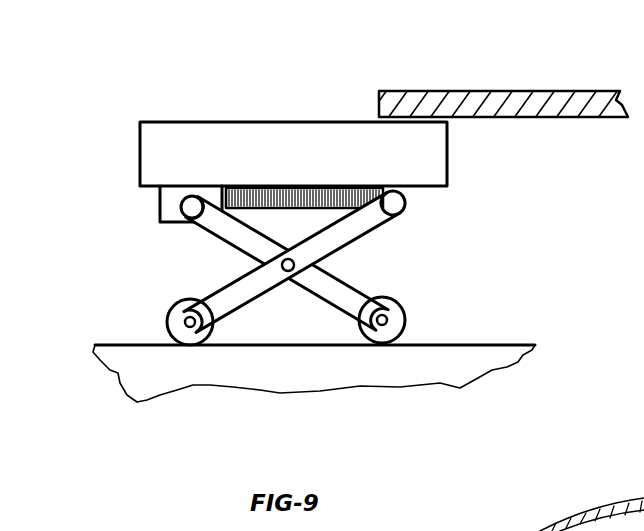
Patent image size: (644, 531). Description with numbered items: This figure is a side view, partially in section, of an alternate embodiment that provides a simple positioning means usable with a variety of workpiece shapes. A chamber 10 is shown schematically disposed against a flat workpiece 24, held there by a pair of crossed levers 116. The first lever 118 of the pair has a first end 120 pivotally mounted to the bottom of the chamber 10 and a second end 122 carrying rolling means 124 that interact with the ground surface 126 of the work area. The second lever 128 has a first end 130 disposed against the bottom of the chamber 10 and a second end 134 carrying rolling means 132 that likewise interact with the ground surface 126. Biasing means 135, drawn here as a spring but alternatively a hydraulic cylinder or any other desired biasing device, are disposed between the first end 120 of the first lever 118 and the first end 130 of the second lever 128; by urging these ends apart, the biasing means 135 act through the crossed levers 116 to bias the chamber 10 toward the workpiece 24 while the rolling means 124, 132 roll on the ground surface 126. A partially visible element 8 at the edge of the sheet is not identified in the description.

The chamber 10 is at (239, 108).
The flat workpiece 24 is at (490, 106).
The biasing means 135 is at (296, 190).
The first end of first lever 120 is at (212, 232).
The first lever 118 is at (307, 293).
The second lever 128 is at (228, 300).
The first end of second lever 130 is at (370, 221).
The pair of crossed levers 116 is at (362, 263).
The rolling means 132 is at (186, 339).
The second end of second lever 134 is at (184, 326).
The second end of first lever 122 is at (397, 301).
The rolling means 124 is at (405, 328).
The ground surface 126 is at (510, 343).
The housing 8 is at (592, 492).